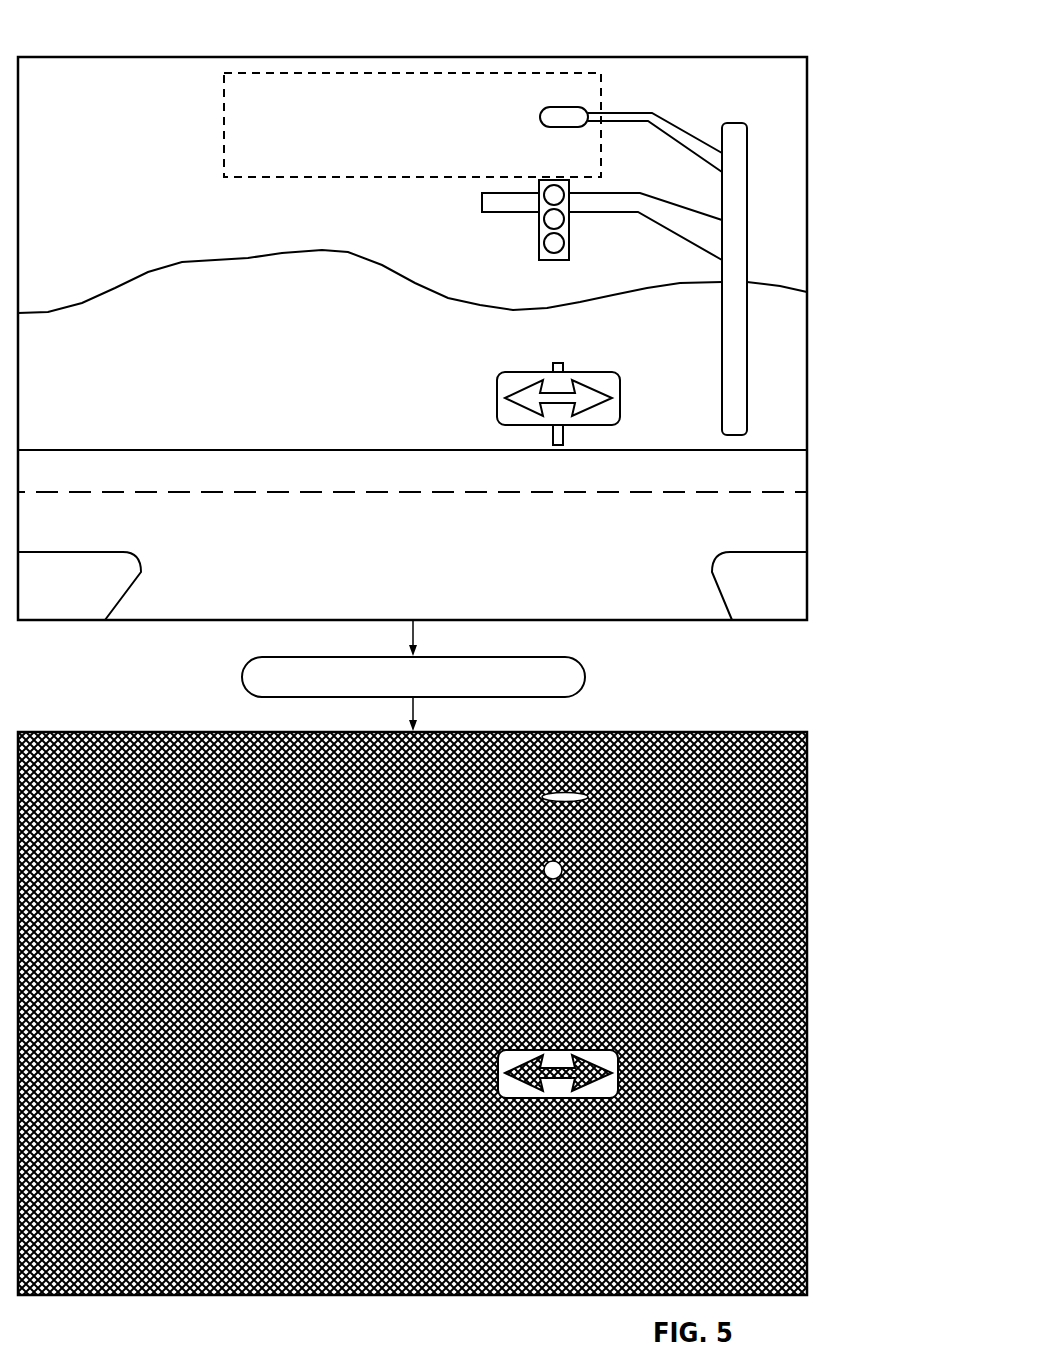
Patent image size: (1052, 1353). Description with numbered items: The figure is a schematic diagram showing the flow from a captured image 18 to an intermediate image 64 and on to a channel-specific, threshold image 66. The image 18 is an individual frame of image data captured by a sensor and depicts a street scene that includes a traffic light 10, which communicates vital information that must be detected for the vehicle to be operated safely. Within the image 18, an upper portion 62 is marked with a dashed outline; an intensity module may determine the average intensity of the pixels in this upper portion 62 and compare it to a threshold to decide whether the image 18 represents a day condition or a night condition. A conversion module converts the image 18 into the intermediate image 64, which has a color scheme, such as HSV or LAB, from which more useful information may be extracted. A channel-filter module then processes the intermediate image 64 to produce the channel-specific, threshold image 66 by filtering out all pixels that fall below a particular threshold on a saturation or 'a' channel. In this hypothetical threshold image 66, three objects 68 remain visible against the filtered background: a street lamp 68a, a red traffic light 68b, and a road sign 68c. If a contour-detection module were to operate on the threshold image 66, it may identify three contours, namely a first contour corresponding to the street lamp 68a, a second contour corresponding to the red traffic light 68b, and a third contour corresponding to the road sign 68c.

The image 18 is at (108, 50).
The upper portion 62 is at (290, 62).
The traffic light 10 is at (532, 251).
The intermediate image 64 is at (538, 689).
The channel-specific, threshold image 66 is at (125, 722).
The object 68 is at (707, 928).
The street lamp 68a is at (600, 796).
The red traffic light 68b is at (572, 865).
The road sign 68c is at (632, 1058).